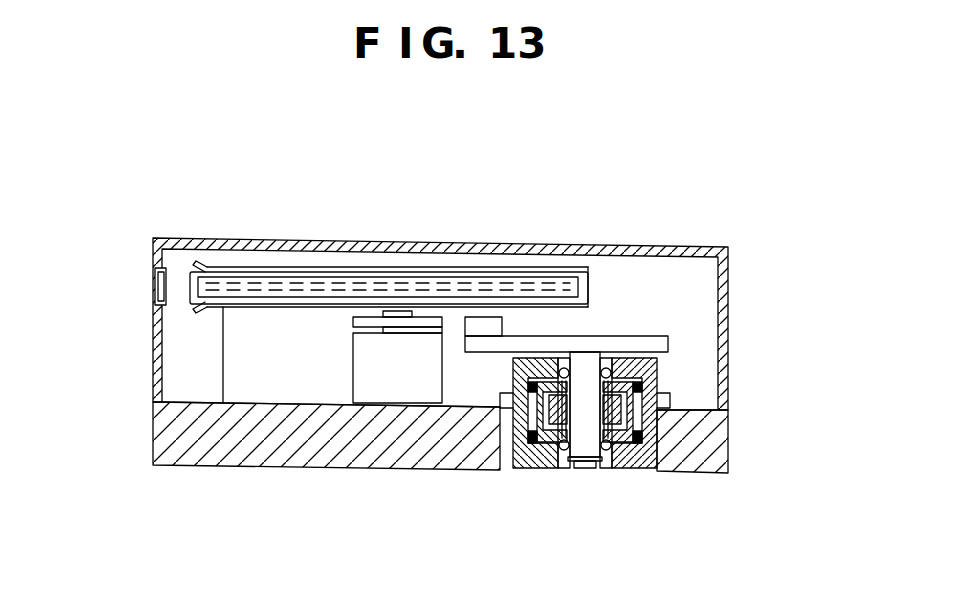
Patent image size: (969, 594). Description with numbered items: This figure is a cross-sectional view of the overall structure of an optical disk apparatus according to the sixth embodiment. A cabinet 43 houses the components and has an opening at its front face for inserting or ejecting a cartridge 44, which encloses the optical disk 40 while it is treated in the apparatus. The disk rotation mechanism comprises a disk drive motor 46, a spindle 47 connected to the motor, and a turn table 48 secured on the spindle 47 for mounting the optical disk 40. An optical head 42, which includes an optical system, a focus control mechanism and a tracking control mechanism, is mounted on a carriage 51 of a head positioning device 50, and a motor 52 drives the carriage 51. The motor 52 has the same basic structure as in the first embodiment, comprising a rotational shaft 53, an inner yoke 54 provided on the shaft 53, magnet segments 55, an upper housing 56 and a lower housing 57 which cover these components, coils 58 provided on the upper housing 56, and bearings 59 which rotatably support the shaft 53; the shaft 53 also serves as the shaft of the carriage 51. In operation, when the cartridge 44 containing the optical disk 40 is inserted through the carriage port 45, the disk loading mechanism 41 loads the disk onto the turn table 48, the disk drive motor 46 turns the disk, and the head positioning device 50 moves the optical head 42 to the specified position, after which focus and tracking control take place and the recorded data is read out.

The optical disk 40 is at (337, 267).
The disk loading mechanism 41 is at (432, 272).
The optical head 42 is at (485, 317).
The cabinet 43 is at (152, 338).
The cartridge 44 is at (284, 267).
The carriage port 45 is at (153, 280).
The disk drive motor 46 is at (378, 387).
The spindle 47 is at (428, 315).
The turn table 48 is at (353, 320).
The head positioning device 50 is at (692, 342).
The carriage 51 is at (645, 330).
The motor 52 is at (677, 398).
The rotational shaft 53 is at (580, 475).
The inner yoke 54 is at (542, 468).
The magnet segments 55 is at (613, 475).
The upper housing 56 is at (453, 471).
The lower housing 57 is at (640, 475).
The coils 58 is at (530, 465).
The bearings 59 is at (606, 366).